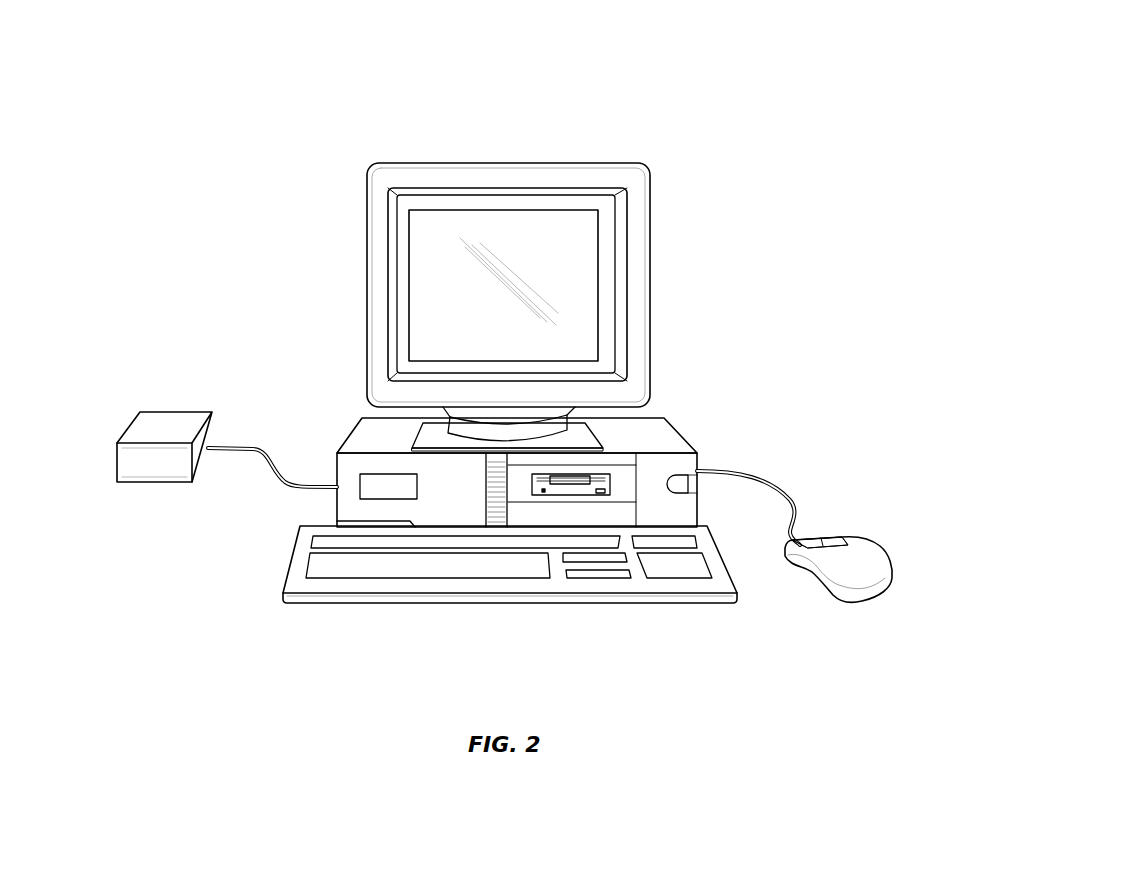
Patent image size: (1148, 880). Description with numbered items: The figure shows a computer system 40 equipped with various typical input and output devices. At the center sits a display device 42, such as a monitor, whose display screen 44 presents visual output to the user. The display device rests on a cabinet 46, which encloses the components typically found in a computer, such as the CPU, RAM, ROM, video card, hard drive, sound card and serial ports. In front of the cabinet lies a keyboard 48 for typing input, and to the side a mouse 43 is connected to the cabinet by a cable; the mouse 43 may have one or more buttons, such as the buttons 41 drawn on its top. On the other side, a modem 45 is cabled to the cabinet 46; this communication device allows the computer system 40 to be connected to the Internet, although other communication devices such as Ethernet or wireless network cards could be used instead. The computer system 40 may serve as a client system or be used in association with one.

The computer system 40 is at (758, 60).
The buttons 41 is at (833, 538).
The display device 42 is at (652, 275).
The mouse 43 is at (868, 568).
The display screen 44 is at (570, 225).
The modem 45 is at (145, 425).
The cabinet 46 is at (672, 428).
The keyboard 48 is at (415, 585).